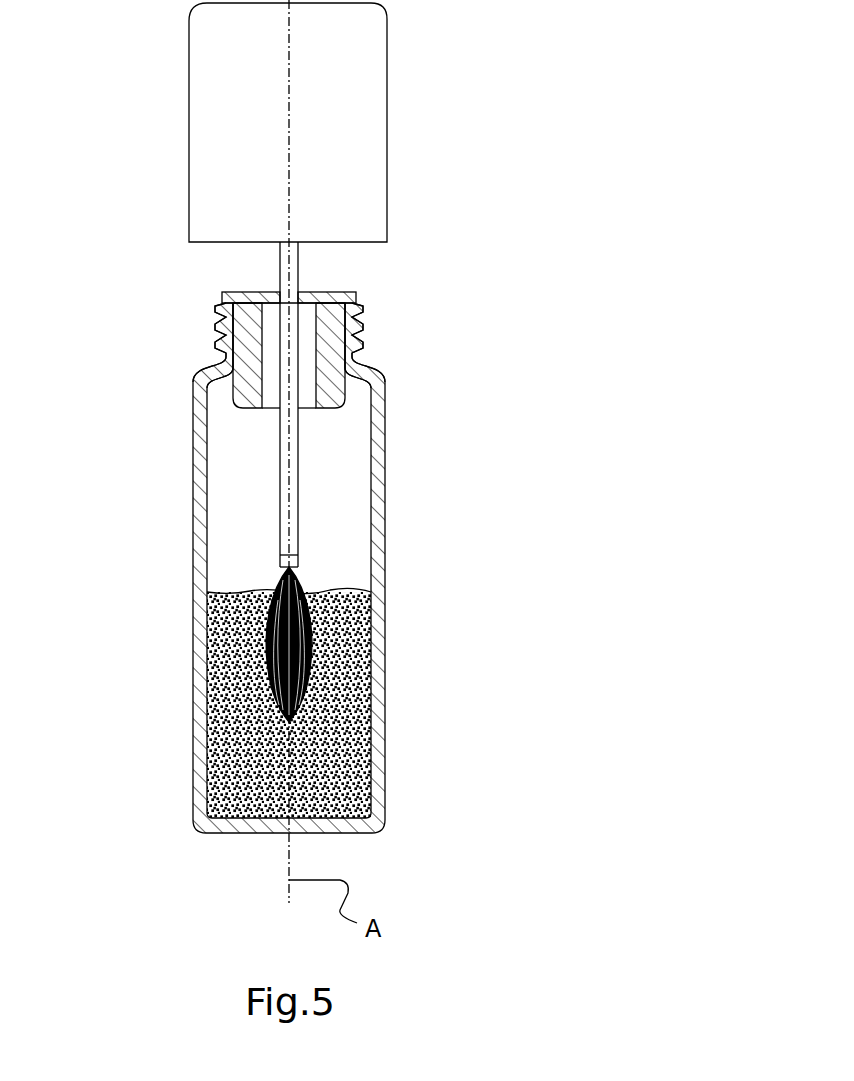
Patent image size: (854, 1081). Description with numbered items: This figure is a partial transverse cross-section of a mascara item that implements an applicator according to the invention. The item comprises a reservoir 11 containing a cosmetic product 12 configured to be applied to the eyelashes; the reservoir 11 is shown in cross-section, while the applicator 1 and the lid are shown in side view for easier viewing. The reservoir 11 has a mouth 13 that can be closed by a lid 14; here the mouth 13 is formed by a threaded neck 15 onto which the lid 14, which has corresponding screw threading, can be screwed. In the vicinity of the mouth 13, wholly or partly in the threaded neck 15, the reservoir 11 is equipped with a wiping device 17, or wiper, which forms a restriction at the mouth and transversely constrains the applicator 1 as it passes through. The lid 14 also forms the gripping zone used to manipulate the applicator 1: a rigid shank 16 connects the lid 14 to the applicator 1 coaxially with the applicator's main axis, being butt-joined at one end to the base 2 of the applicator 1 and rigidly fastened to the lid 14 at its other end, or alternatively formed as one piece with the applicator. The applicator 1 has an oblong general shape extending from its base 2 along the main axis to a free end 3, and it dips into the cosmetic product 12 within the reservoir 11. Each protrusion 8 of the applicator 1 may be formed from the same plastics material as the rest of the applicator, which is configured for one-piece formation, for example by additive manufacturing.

The lid 14 is at (365, 138).
The mouth 13 is at (330, 292).
The threaded neck 15 is at (363, 312).
The wiping device 17 is at (340, 356).
The rigid shank 16 is at (298, 467).
The base 2 is at (298, 562).
The applicator 1 is at (300, 592).
The protrusion 8 is at (308, 624).
The free end 3 is at (292, 723).
The cosmetic product 12 is at (227, 670).
The reservoir 11 is at (193, 760).